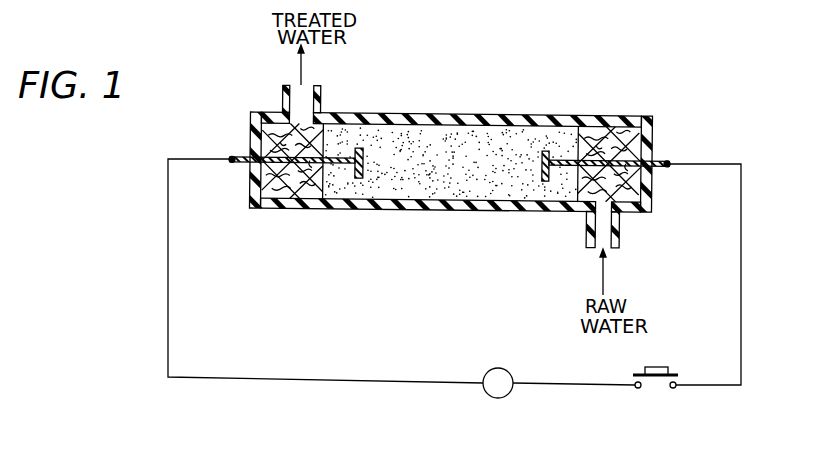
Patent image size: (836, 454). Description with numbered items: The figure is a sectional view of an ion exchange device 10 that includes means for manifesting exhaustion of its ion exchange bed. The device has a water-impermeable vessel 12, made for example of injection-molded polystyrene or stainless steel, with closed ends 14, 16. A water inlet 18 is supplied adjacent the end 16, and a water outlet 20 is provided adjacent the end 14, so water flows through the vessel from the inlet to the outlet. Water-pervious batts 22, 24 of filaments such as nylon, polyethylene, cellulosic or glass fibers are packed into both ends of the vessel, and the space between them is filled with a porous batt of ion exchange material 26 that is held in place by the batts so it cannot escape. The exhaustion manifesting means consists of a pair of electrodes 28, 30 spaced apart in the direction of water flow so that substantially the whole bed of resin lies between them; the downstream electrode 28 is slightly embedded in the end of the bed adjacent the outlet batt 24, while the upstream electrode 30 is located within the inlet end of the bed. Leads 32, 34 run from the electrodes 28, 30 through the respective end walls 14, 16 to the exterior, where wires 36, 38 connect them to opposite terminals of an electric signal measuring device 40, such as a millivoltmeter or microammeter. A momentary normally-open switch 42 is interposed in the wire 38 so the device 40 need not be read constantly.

The device 10 is at (654, 104).
The vessel 12 is at (352, 210).
The end 14 is at (250, 203).
The end 16 is at (655, 191).
The water inlet 18 is at (621, 237).
The water outlet 20 is at (282, 93).
The batt 22 is at (605, 140).
The batt 24 is at (262, 129).
The ion exchange material 26 is at (433, 188).
The downstream electrode 28 is at (360, 146).
The upstream electrode 30 is at (548, 150).
The lead 32 is at (240, 165).
The lead 34 is at (662, 161).
The wire 36 is at (256, 379).
The wire 38 is at (741, 349).
The electric signal measuring device 40 is at (503, 368).
The momentary normally-open switch 42 is at (656, 386).